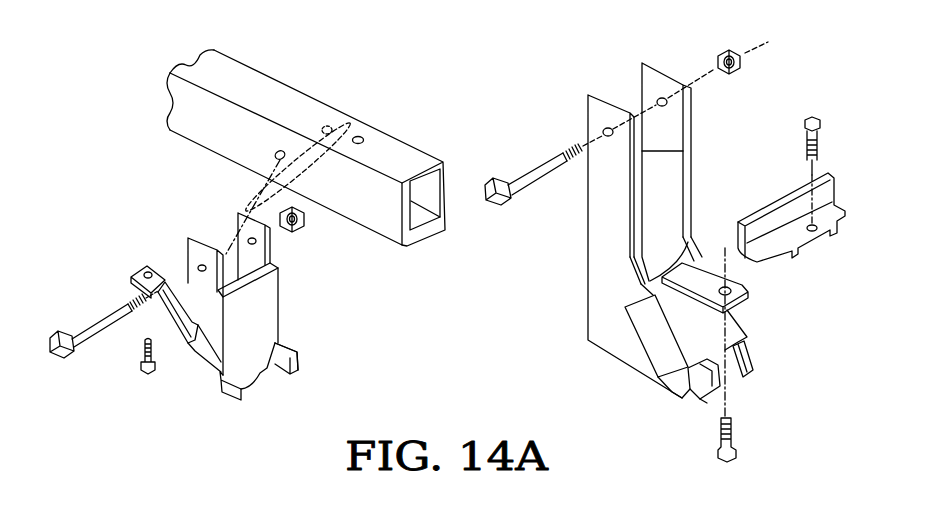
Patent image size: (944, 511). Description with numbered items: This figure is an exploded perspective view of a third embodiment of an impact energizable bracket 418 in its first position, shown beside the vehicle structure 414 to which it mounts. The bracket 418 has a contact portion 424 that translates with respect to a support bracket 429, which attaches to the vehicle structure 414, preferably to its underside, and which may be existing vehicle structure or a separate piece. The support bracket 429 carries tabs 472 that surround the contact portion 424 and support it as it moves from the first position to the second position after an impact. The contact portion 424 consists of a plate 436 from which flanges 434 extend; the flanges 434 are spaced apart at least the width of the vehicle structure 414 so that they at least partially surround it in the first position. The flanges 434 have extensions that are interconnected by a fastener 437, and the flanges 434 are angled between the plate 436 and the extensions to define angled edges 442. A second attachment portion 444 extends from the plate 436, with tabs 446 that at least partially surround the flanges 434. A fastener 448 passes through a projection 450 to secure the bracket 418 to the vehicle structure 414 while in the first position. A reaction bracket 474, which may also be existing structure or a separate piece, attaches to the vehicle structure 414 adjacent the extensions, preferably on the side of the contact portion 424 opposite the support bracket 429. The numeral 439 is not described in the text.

The vehicle structure 414 is at (386, 60).
The bracket 418 is at (570, 36).
The contact portion 424 is at (617, 355).
The support bracket 429 is at (268, 370).
The flanges 434 is at (685, 392).
The plate 436 is at (707, 403).
The fastener 437 is at (535, 163).
The plate 439 is at (692, 108).
The angled edges 442 is at (660, 276).
The second attachment portion 444 is at (740, 322).
The tabs 446 is at (633, 331).
The fastener 448 is at (733, 440).
The projection 450 is at (743, 282).
The tabs 472 is at (276, 342).
The reaction bracket 474 is at (838, 180).